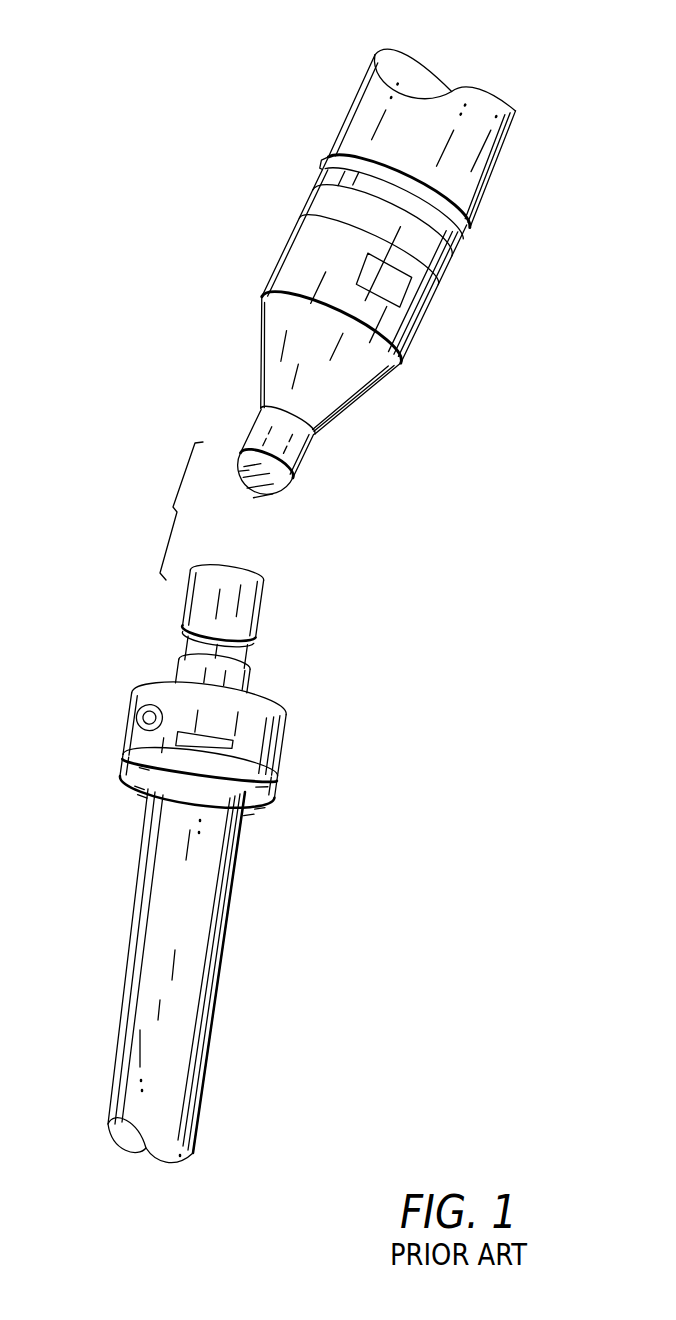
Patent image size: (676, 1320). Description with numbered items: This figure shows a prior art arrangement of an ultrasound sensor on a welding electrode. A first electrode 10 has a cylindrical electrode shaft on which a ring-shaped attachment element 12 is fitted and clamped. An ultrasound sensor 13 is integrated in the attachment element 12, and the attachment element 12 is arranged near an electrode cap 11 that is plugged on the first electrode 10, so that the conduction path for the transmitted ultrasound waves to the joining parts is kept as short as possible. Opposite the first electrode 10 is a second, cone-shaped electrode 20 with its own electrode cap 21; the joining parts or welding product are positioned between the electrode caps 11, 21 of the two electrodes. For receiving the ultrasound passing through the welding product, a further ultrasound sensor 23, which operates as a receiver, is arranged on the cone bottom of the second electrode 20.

The first electrode 10 is at (168, 945).
The electrode cap 11 is at (205, 603).
The attachment element 12 is at (201, 714).
The ultrasound sensor 13 is at (273, 760).
The second electrode 20 is at (360, 117).
The electrode cap 21 is at (283, 474).
The ultrasound sensor 23 is at (328, 202).